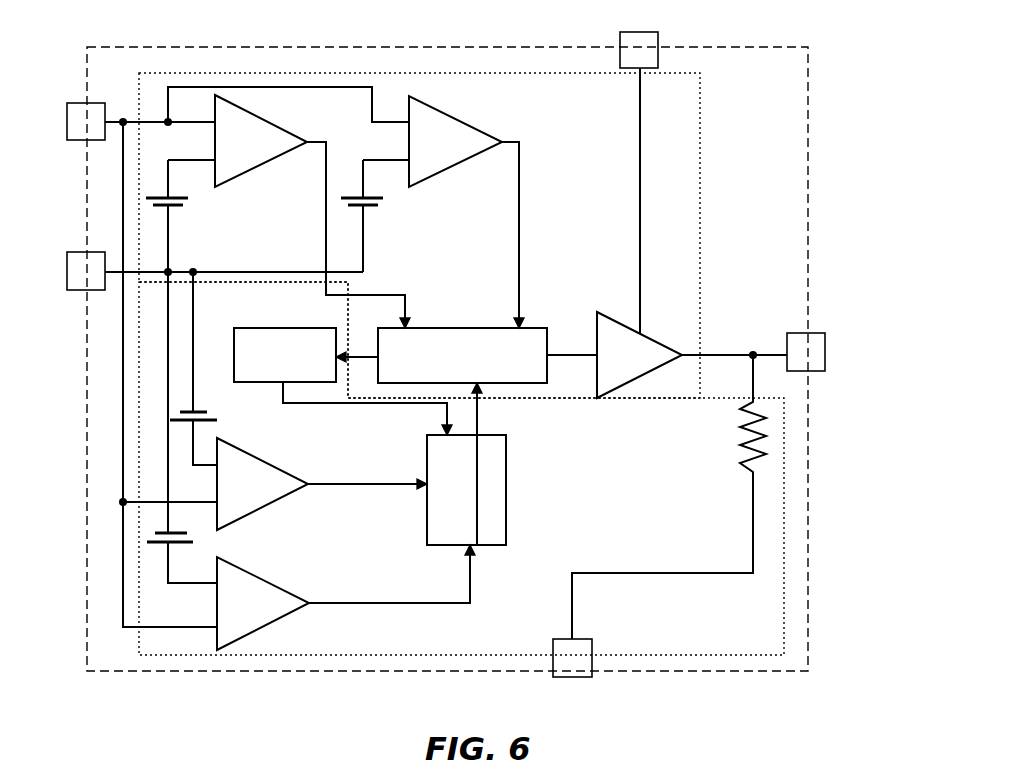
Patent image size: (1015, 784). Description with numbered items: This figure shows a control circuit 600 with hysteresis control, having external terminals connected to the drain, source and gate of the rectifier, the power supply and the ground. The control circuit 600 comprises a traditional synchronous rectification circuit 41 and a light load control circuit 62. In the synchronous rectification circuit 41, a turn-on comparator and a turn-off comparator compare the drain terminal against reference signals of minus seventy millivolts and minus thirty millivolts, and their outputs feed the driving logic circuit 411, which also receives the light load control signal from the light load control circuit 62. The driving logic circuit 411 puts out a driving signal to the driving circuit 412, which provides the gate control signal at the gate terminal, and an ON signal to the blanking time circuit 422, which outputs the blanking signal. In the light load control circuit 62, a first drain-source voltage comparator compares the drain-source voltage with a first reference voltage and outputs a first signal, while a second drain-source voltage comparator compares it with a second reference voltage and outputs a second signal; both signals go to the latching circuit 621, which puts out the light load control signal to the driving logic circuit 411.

The control circuit 600 is at (872, 161).
The synchronous rectification circuit 41 is at (419, 235).
The driving logic circuit 411 is at (462, 355).
The driving circuit 412 is at (639, 355).
The blanking time circuit 422 is at (285, 355).
The light load control circuit 62 is at (461, 463).
The latching circuit 621 is at (466, 490).